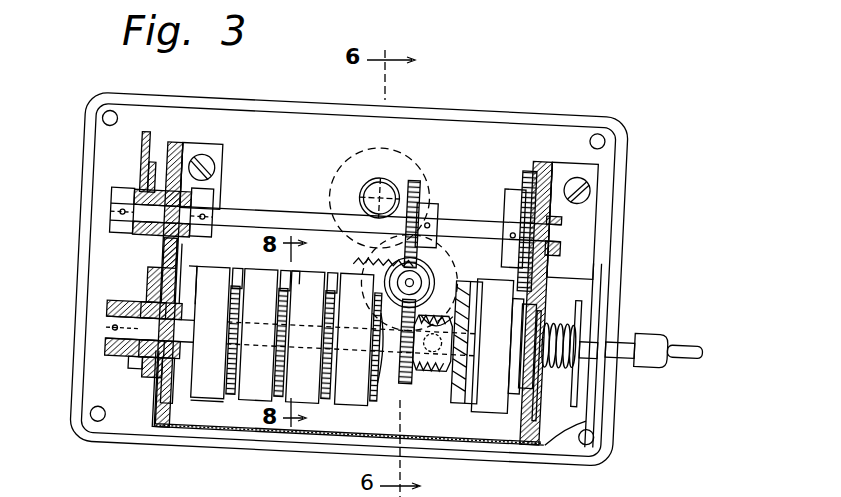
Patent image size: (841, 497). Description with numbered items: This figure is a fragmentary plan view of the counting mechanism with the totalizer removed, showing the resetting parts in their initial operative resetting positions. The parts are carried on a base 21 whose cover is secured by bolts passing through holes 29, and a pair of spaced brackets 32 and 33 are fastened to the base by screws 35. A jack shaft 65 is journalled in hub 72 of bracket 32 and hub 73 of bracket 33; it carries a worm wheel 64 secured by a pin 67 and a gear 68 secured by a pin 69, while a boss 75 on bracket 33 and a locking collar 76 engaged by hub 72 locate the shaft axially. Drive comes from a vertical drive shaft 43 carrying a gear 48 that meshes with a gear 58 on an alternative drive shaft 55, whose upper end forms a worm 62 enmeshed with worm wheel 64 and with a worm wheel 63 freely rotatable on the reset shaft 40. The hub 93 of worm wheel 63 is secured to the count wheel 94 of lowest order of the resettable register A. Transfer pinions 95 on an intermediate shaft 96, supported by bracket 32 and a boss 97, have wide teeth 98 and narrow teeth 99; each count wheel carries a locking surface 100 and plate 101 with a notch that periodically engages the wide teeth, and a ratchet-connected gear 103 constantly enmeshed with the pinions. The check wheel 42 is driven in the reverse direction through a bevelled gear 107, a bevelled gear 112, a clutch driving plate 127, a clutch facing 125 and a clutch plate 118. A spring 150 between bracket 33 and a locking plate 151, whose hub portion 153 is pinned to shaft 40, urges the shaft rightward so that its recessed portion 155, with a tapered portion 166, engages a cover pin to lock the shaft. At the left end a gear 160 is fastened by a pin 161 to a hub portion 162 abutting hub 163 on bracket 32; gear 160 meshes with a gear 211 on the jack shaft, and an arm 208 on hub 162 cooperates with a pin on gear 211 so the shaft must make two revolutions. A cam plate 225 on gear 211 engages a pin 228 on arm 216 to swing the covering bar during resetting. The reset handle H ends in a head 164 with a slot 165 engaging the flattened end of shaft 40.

The base 21 is at (115, 230).
The holes 29 is at (102, 116).
The bracket 32 is at (177, 139).
The bracket 33 is at (542, 141).
The screws 35 is at (218, 160).
The shaft 40 is at (116, 327).
The check wheel 42 is at (503, 396).
The drive shaft 43 is at (370, 175).
The gear 48 is at (392, 142).
The alternative drive shaft 55 is at (443, 258).
The gear 58 is at (456, 268).
The worm 62 is at (432, 250).
The worm wheel 63 is at (418, 370).
The worm wheel 64 is at (422, 170).
The jack shaft 65 is at (290, 203).
The pin 67 is at (433, 200).
The gear 68 is at (527, 160).
The pin 69 is at (516, 212).
The hub 72 is at (190, 170).
The hub 73 is at (566, 200).
The boss 75 is at (556, 170).
The locking collar 76 is at (218, 195).
The hub 93 is at (396, 372).
The count wheel 94 is at (226, 394).
The transfer pinion 95 is at (303, 262).
The intermediate shaft 96 is at (201, 266).
The boss 97 is at (374, 262).
The wide teeth 98 is at (255, 266).
The narrow teeth 99 is at (245, 262).
The locking surface 100 is at (298, 270).
The plate 101 is at (344, 390).
The gear 103 is at (318, 394).
The bevelled gear 107 is at (442, 356).
The bevelled gear 112 is at (478, 388).
The clutch plate 118 is at (527, 376).
The clutch facing 125 is at (538, 370).
The clutch driving plate 127 is at (551, 358).
The spring 150 is at (562, 304).
The locking plate 151 is at (590, 432).
The hub portion 153 is at (600, 276).
The recessed portion 155 is at (600, 318).
The gear 160 is at (162, 376).
The pin 161 is at (120, 335).
The hub portion 162 is at (150, 352).
The hub 163 is at (178, 400).
The head 164 is at (590, 290).
The slot 165 is at (658, 311).
The tapered portion 166 is at (622, 336).
The arm 208 is at (140, 364).
The gear 211 is at (143, 151).
The arm 216 is at (155, 290).
The cam plate 225 is at (138, 192).
The pin 228 is at (170, 258).
The resettable register A is at (256, 422).
The reset handle H is at (706, 322).